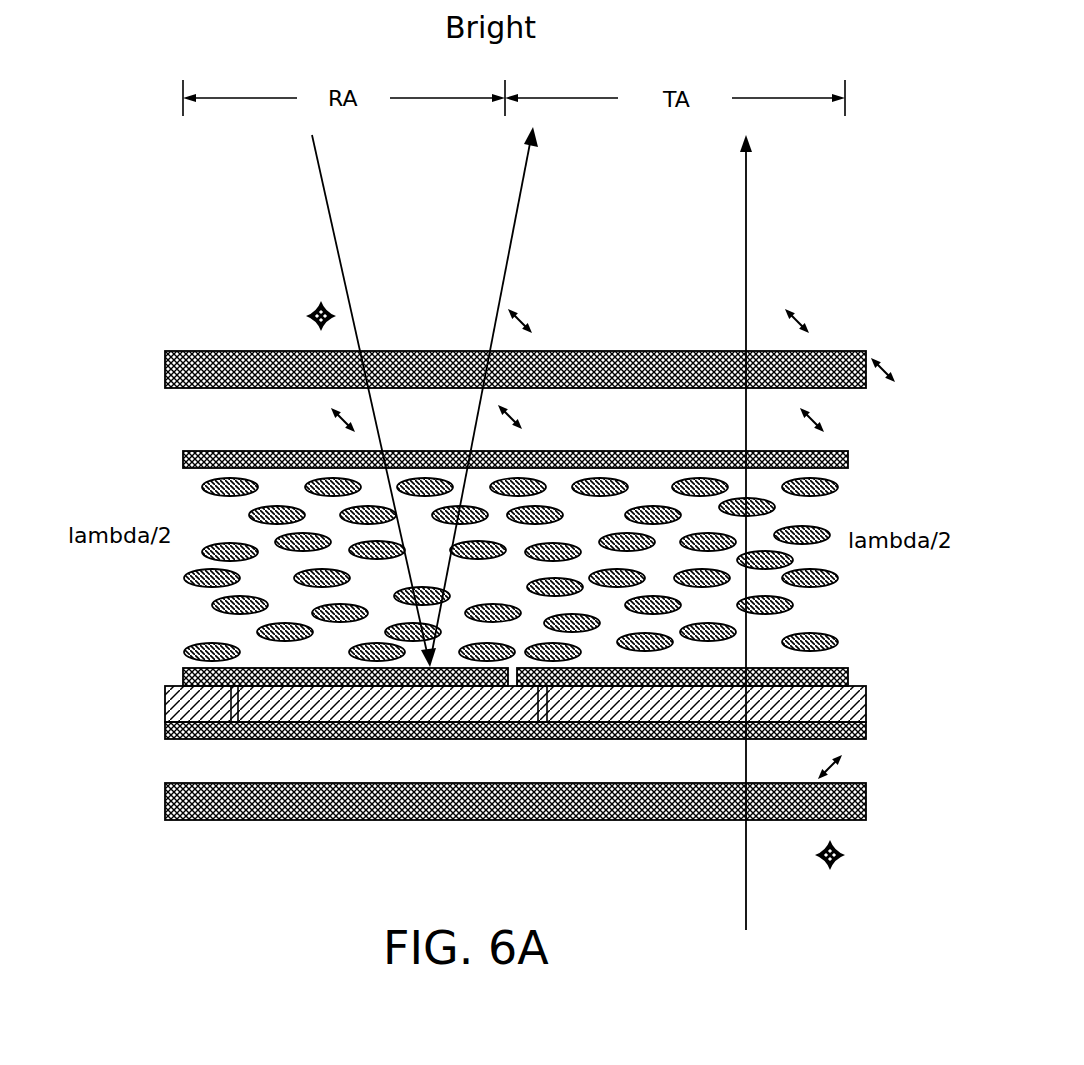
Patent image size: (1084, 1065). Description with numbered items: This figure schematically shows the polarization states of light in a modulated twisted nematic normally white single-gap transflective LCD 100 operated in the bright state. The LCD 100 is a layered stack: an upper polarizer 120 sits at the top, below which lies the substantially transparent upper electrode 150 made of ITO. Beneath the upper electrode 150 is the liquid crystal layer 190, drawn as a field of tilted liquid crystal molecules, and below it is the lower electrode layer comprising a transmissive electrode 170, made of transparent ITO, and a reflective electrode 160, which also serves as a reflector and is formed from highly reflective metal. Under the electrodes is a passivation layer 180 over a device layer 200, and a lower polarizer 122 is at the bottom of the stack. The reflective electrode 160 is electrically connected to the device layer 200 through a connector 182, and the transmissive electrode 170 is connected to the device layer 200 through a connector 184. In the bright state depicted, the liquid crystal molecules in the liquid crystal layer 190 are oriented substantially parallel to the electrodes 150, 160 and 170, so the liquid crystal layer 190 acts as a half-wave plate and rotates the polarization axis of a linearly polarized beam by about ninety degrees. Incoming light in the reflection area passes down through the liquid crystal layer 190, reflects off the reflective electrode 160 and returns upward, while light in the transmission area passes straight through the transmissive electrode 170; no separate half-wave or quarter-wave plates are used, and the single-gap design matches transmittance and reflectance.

The transflective LCD 100 is at (257, 280).
The polarizer 120 is at (165, 370).
The polarizer 122 is at (165, 801).
The upper electrode 150 is at (183, 460).
The reflective electrode 160 is at (183, 676).
The transmissive electrode 170 is at (848, 680).
The passivation layer 180 is at (475, 726).
The connector 182 is at (238, 700).
The connector 184 is at (547, 700).
The liquid crystal layer 190 is at (172, 587).
The device layer 200 is at (165, 728).